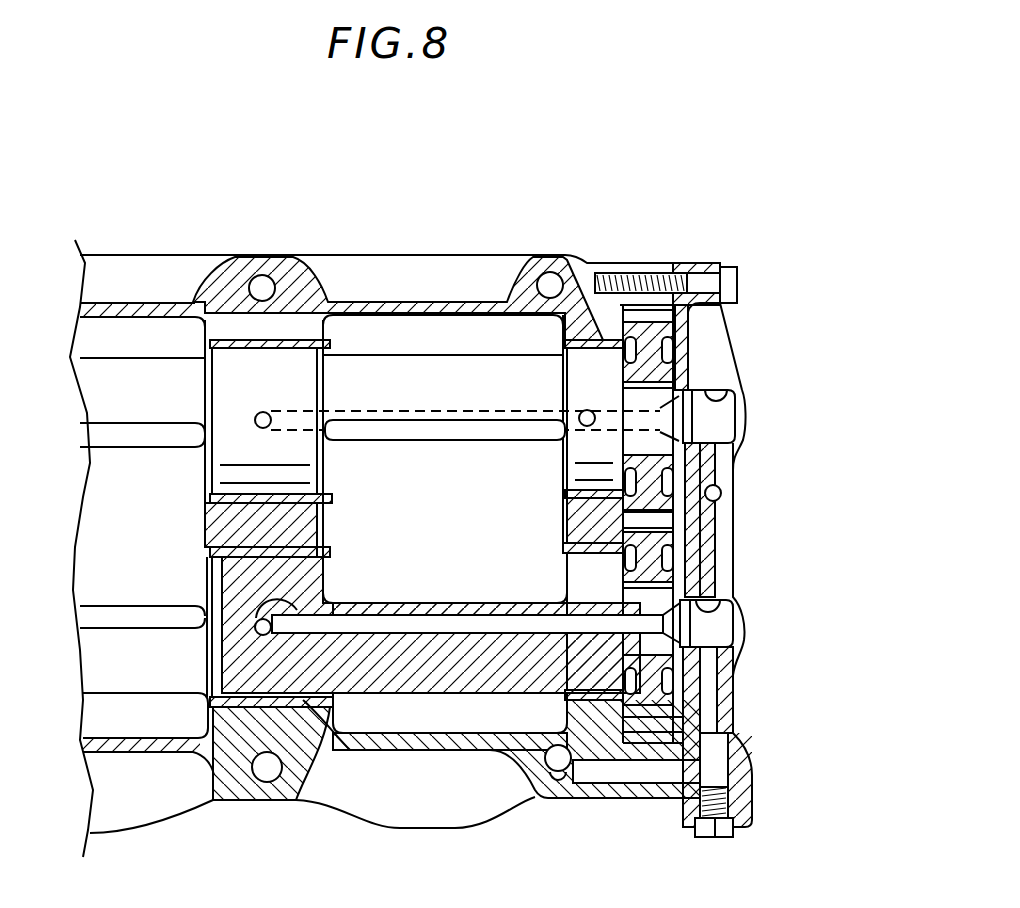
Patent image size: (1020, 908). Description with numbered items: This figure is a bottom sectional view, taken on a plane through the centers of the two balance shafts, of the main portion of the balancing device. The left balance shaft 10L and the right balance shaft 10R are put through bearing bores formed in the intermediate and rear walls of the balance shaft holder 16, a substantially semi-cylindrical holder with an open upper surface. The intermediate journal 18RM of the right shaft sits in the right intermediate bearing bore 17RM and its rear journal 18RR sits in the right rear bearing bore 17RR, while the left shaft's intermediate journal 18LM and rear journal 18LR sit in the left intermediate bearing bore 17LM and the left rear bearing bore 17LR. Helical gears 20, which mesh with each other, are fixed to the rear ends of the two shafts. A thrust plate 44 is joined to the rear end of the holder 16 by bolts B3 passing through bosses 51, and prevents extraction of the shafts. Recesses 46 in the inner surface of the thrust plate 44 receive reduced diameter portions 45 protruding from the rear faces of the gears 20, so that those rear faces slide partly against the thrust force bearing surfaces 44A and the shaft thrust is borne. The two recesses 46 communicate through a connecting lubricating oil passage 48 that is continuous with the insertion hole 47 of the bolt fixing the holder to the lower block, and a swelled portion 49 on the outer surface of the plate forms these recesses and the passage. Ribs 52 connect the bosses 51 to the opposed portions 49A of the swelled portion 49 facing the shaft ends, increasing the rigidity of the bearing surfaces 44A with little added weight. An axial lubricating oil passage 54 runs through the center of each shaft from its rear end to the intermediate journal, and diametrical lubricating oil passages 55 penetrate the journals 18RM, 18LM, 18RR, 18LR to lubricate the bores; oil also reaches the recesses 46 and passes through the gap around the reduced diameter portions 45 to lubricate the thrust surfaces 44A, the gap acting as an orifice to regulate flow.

The balance shaft holder 16 is at (401, 258).
The right balance shaft 10R is at (143, 410).
The left balance shaft 10L is at (137, 637).
The right intermediate bearing bore 17RM is at (270, 262).
The right intermediate journal 18RM is at (217, 387).
The right rear bearing bore 17RR is at (578, 376).
The right rear journal 18RR is at (597, 360).
The left intermediate bearing bore 17LM is at (322, 560).
The left intermediate journal 18LM is at (238, 560).
The left rear bearing bore 17LR is at (597, 660).
The left rear journal 18LR is at (575, 566).
The helical gear 20 is at (644, 300).
The boss 51 is at (695, 268).
The bolt B3 is at (737, 266).
The rib 52 is at (712, 322).
The reduced diameter portion 45 is at (707, 348).
The recess 46 is at (695, 396).
The opposed portion 49A is at (742, 427).
The thrust force bearing surface 44A is at (705, 466).
The connecting lubricating oil passage 48 is at (718, 495).
The swelled portion 49 is at (730, 523).
The thrust plate 44 is at (757, 737).
The axial lubricating oil passage 54 is at (400, 418).
The diametrical lubricating oil passage 55 is at (563, 450).
The insertion hole 47 is at (545, 780).